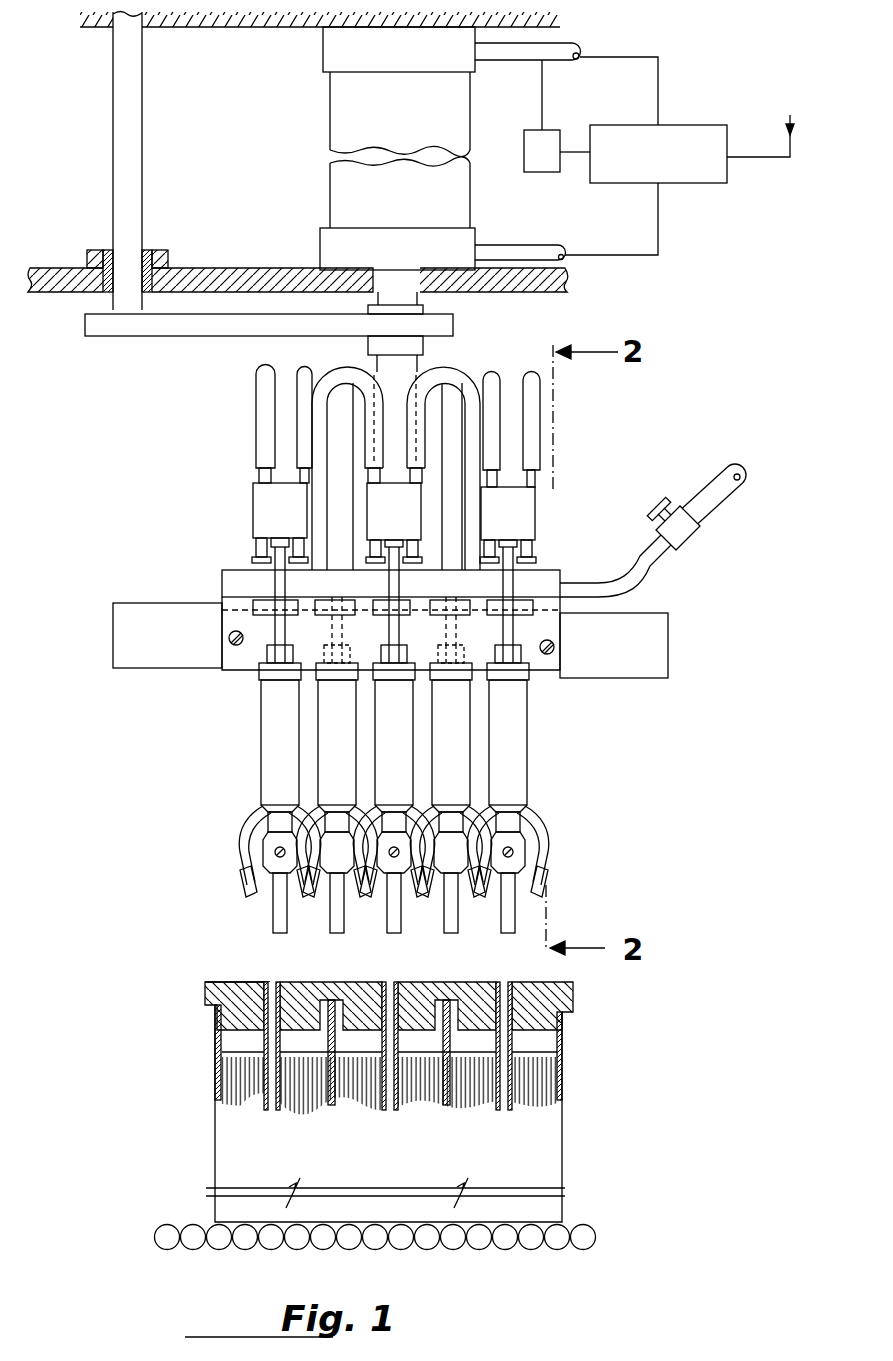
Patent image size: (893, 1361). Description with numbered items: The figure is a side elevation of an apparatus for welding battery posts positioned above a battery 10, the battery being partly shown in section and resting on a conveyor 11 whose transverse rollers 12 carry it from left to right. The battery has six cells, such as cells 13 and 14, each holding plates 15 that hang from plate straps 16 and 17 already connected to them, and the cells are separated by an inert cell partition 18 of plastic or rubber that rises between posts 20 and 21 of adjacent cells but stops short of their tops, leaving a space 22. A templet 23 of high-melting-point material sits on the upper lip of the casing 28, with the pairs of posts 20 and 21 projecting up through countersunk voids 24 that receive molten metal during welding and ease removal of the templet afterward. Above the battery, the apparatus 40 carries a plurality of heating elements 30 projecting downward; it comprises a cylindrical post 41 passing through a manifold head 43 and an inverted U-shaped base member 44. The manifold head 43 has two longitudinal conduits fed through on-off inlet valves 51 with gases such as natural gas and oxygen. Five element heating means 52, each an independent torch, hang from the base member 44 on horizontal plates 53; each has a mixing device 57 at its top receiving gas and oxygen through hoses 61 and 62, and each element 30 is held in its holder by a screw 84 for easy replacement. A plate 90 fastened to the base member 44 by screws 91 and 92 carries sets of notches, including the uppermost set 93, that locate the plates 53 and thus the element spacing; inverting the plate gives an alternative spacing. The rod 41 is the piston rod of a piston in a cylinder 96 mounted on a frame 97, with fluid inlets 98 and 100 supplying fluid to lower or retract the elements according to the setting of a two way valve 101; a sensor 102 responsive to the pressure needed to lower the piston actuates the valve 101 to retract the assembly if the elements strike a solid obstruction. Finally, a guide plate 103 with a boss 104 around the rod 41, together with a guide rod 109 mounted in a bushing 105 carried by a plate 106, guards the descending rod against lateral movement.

The battery 10 is at (418, 1112).
The conveyor 11 is at (590, 1232).
The transverse rollers 12 is at (350, 1240).
The cell 13 is at (535, 1078).
The cell 14 is at (418, 1045).
The plates 15 is at (513, 1098).
The plate strap 16 is at (478, 1050).
The plate strap 17 is at (550, 1058).
The cell partition 18 is at (503, 1043).
The post 20 is at (497, 985).
The post 21 is at (520, 985).
The space 22 is at (500, 985).
The templet 23 is at (205, 993).
The voids 24 is at (410, 985).
The casing 28 is at (215, 1038).
The heating elements 30 is at (455, 925).
The apparatus 40 is at (445, 650).
The post 41 is at (400, 375).
The manifold head 43 is at (230, 572).
The base member 44 is at (652, 652).
The on-off inlet valves 51 is at (678, 522).
The element heating means 52 is at (459, 789).
The horizontal plate 53 is at (272, 682).
The mixing device 57 is at (544, 516).
The hose 61 is at (492, 383).
The hose 62 is at (540, 408).
The screws 84 is at (551, 845).
The plate 90 is at (398, 666).
The screw 91 is at (547, 655).
The screw 92 is at (228, 636).
The uppermost set of notches 93 is at (522, 618).
The piston cylinder 96 is at (340, 187).
The frame 97 is at (245, 26).
The fluid inlet 98 is at (575, 50).
The fluid inlet 100 is at (538, 248).
The two way valve 101 is at (703, 172).
The sensor 102 is at (547, 132).
The plate 103 is at (156, 322).
The boss 104 is at (375, 345).
The bushing 105 is at (155, 252).
The plate 106 is at (52, 282).
The guide rod 109 is at (122, 188).